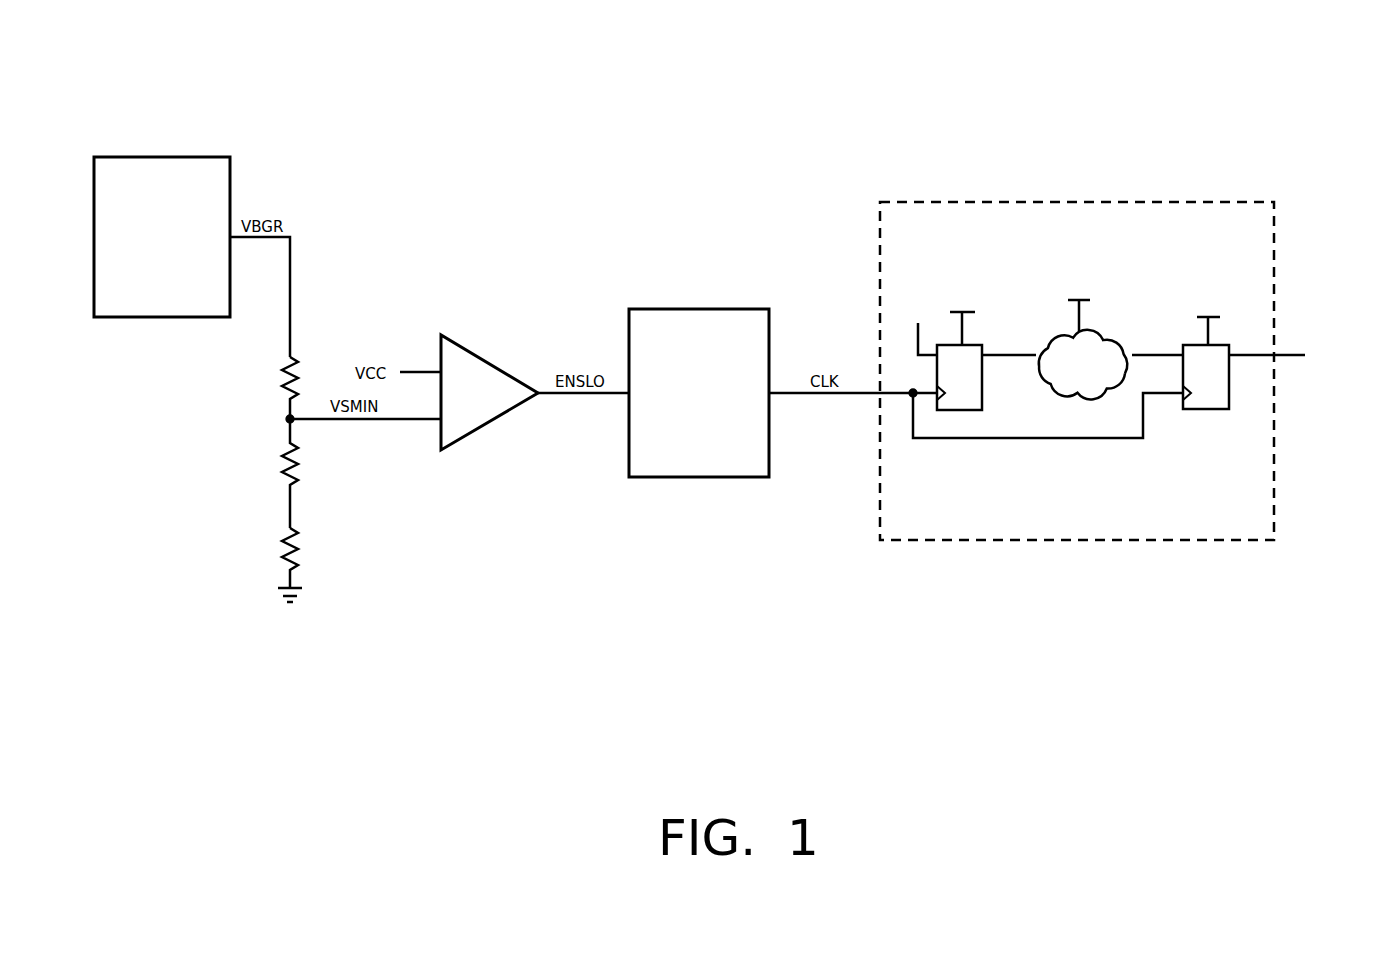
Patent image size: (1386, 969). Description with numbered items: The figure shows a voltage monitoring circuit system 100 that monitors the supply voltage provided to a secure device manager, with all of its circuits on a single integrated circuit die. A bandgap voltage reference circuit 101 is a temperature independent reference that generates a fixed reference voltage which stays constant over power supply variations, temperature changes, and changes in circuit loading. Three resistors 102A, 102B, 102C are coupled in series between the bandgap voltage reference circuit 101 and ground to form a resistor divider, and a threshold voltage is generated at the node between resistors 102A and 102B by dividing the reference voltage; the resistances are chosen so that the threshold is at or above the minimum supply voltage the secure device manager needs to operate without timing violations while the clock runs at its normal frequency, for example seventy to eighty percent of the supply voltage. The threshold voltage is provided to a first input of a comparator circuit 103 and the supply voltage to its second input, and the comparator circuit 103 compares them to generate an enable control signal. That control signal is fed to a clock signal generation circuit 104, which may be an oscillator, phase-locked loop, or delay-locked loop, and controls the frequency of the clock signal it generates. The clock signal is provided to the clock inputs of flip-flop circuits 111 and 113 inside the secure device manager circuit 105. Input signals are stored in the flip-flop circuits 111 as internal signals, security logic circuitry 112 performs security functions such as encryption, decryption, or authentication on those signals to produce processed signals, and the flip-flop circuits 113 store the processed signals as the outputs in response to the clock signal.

The voltage monitoring circuit system 100 is at (388, 68).
The bandgap voltage reference circuit 101 is at (192, 157).
The resistor 102A is at (284, 378).
The resistor 102B is at (284, 463).
The resistor 102C is at (284, 548).
The comparator circuit 103 is at (472, 350).
The clock signal generation circuit 104 is at (692, 309).
The secure device manager circuit 105 is at (1195, 202).
The flip-flop circuit 111 is at (975, 345).
The security logic circuitry 112 is at (1110, 333).
The flip-flop circuit 113 is at (1200, 410).